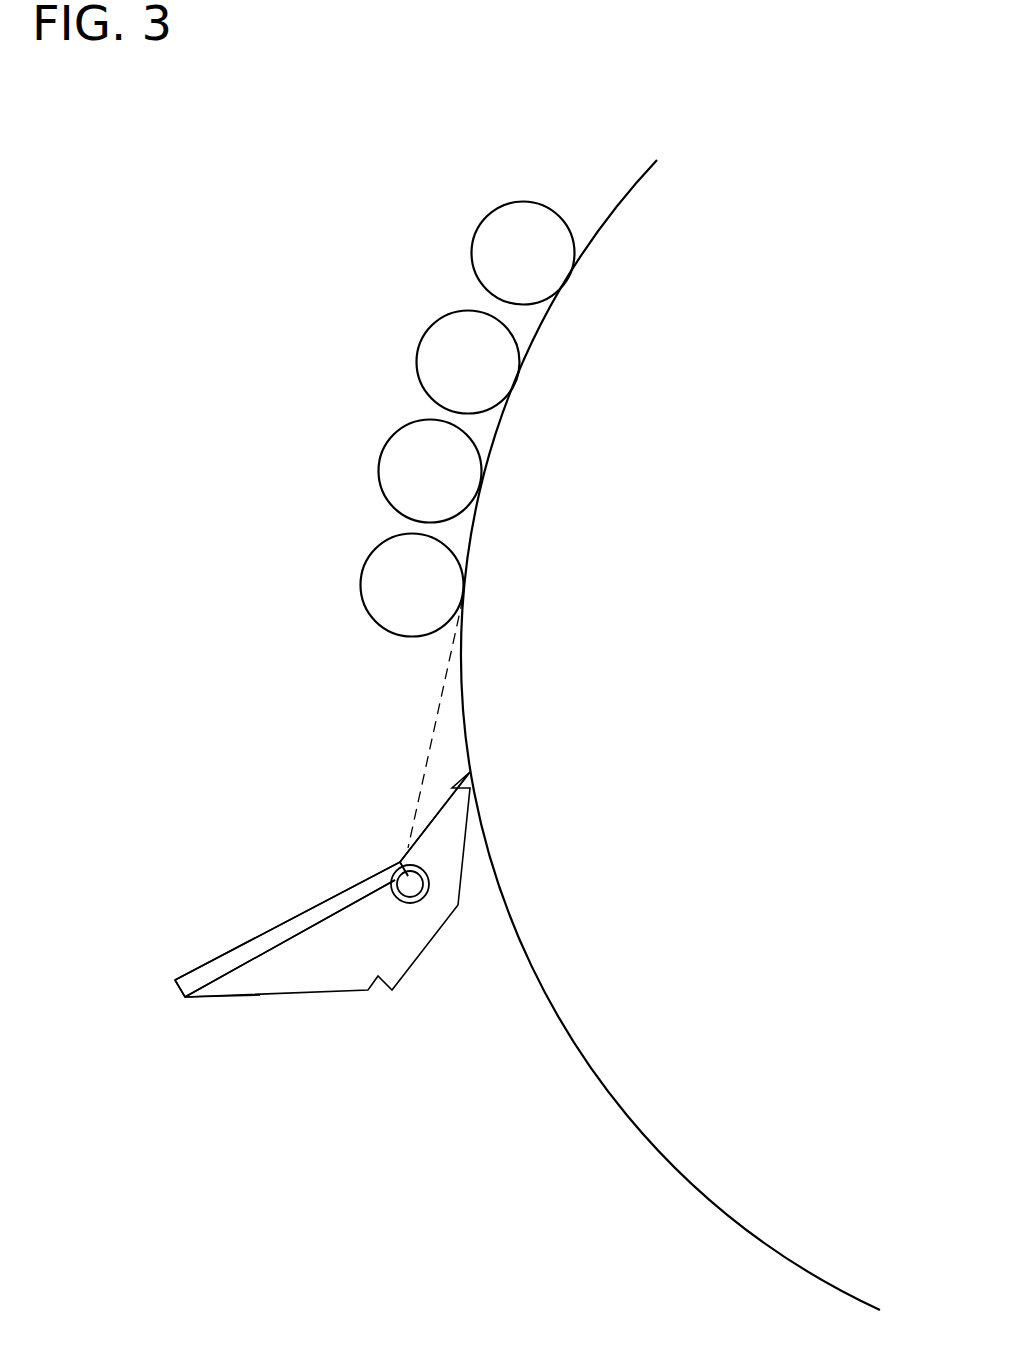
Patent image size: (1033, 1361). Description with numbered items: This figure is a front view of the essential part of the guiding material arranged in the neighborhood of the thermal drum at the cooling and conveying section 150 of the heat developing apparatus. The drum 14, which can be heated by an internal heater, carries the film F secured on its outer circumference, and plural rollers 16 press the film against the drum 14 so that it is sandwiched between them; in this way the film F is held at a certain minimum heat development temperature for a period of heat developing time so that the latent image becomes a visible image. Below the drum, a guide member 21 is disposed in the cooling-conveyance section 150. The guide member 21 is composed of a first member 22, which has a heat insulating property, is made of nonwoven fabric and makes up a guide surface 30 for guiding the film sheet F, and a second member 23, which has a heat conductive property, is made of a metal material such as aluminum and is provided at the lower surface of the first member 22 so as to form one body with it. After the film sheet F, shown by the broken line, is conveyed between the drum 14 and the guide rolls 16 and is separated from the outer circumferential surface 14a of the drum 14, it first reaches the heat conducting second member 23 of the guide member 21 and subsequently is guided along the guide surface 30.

The drum 14 is at (607, 188).
The outer circumferential surface 14a is at (460, 652).
The film F is at (445, 694).
The rollers 16 is at (378, 557).
The cooling and conveying section 150 is at (233, 795).
The guide member 21 is at (314, 890).
The second member 23 is at (420, 845).
The guide surface 30 is at (250, 940).
The first member 22 is at (216, 976).